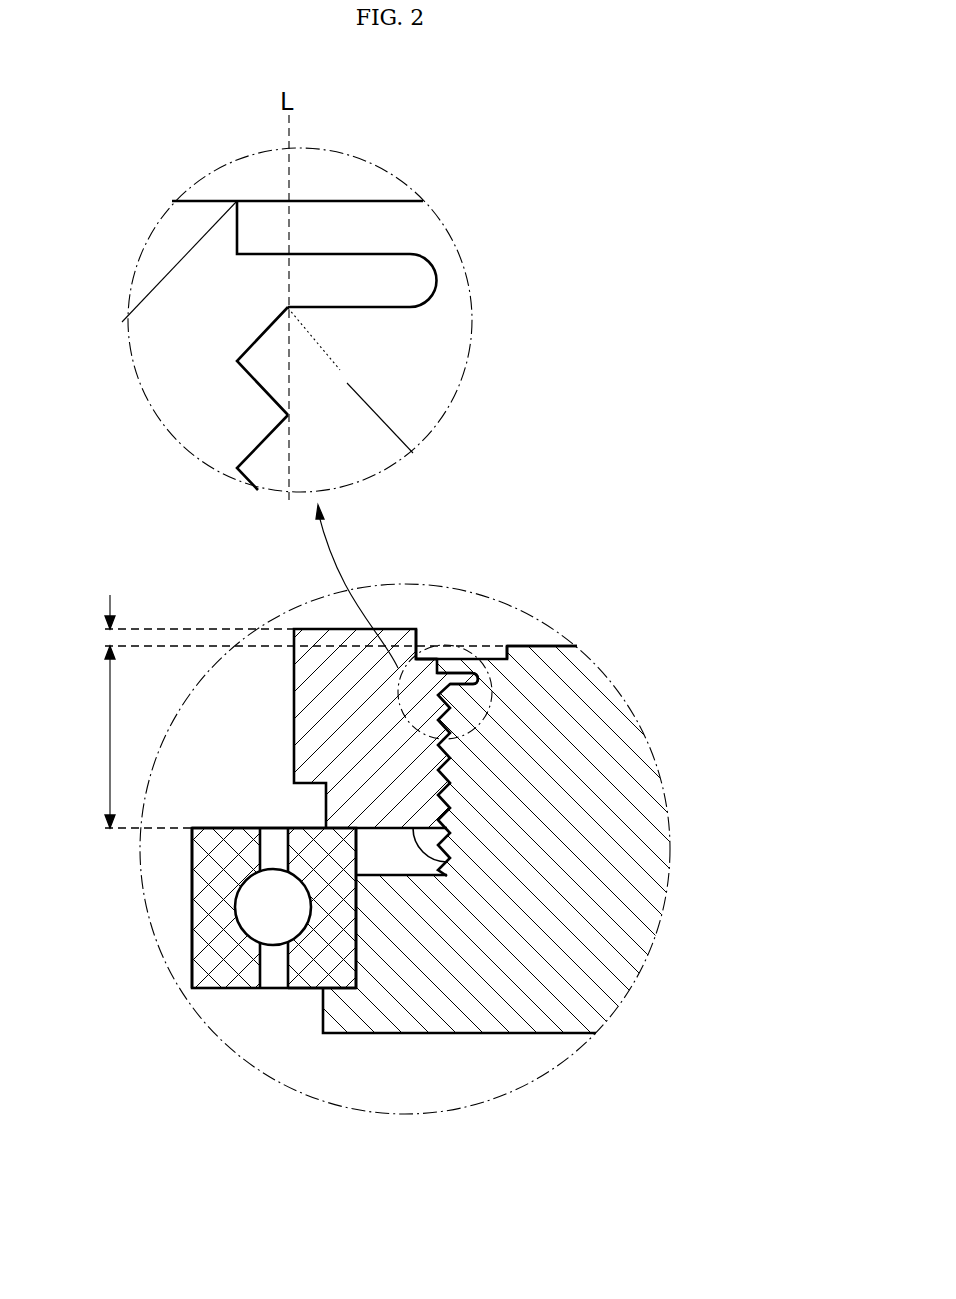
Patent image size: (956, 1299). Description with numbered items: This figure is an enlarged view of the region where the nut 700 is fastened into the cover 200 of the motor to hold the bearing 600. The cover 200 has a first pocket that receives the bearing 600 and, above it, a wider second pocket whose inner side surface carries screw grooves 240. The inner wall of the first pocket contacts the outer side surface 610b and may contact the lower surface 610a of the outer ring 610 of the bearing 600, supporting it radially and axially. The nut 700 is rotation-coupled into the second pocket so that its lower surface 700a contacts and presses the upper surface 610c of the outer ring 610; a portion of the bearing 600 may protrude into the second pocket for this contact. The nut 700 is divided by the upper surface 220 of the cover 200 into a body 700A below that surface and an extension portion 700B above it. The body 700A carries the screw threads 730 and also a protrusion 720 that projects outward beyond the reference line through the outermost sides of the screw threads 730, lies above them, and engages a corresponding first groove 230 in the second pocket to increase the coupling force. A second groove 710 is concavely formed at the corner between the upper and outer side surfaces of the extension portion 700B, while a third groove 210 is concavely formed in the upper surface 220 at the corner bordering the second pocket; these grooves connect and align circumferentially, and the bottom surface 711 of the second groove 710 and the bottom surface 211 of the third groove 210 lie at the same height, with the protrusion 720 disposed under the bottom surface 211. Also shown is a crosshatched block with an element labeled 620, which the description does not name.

The cover 200 is at (408, 367).
The third groove 210 is at (392, 198).
The bottom surface of third groove 211 is at (498, 660).
The upper surface of cover 220 is at (558, 645).
The first groove 230 is at (437, 275).
The screw grooves 240 is at (275, 392).
The bearing 600 is at (183, 912).
The outer ring 610 is at (300, 963).
The lower surface of outer ring 610a is at (312, 988).
The outer side surface of outer ring 610b is at (357, 962).
The upper surface of outer ring 610c is at (297, 824).
The block body 620 is at (222, 955).
The nut 700 is at (172, 367).
The lower surface of nut 700a is at (450, 862).
The body 700A is at (115, 737).
The extension portion 700B is at (307, 627).
The second groove 710 is at (421, 646).
The bottom surface of second groove 711 is at (433, 668).
The protrusion 720 is at (347, 272).
The screw threads 730 is at (272, 420).